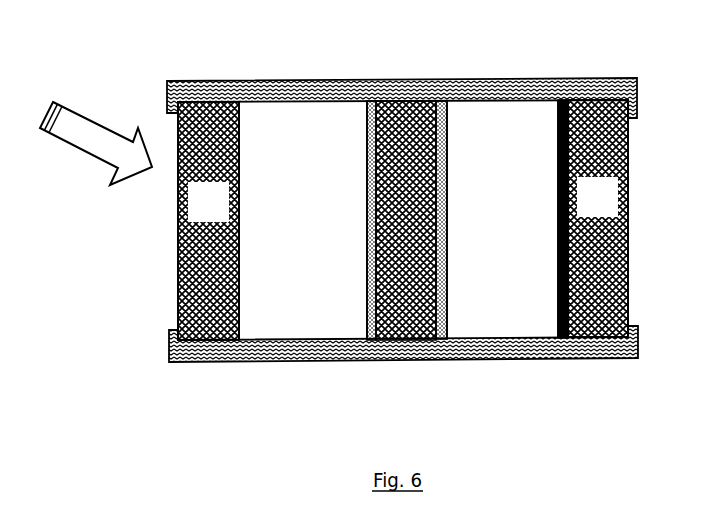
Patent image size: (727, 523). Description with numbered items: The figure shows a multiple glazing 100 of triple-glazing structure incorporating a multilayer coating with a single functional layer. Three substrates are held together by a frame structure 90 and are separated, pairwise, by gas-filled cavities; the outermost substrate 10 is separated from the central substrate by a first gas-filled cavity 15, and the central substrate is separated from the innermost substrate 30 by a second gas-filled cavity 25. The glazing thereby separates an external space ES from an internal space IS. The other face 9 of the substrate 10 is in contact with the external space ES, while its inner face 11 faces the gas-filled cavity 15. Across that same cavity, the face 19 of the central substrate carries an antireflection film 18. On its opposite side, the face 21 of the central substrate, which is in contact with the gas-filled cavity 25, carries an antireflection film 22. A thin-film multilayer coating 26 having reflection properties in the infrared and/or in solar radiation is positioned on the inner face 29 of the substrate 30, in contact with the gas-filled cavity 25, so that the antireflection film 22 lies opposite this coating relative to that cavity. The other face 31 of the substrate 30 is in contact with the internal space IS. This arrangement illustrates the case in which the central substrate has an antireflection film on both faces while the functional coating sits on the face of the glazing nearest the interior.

The multiple glazing 100 is at (147, 82).
The frame structure 90 is at (303, 89).
The other face of the substrate 9 is at (178, 307).
The substrate 10 is at (218, 211).
The inner face of the substrate 11 is at (240, 272).
The gas-filled cavity 15 is at (307, 211).
The antireflection film 18 is at (372, 340).
The face of the central substrate 19 is at (367, 300).
The face of the central substrate 21 is at (449, 267).
The antireflection film 22 is at (444, 338).
The gas-filled cavity 25 is at (505, 209).
The thin-film multilayer coating 26 is at (563, 338).
The inner face of the substrate 29 is at (558, 298).
The substrate 30 is at (605, 207).
The other face of the substrate 31 is at (629, 263).
The external space ES is at (144, 249).
The internal space IS is at (687, 236).